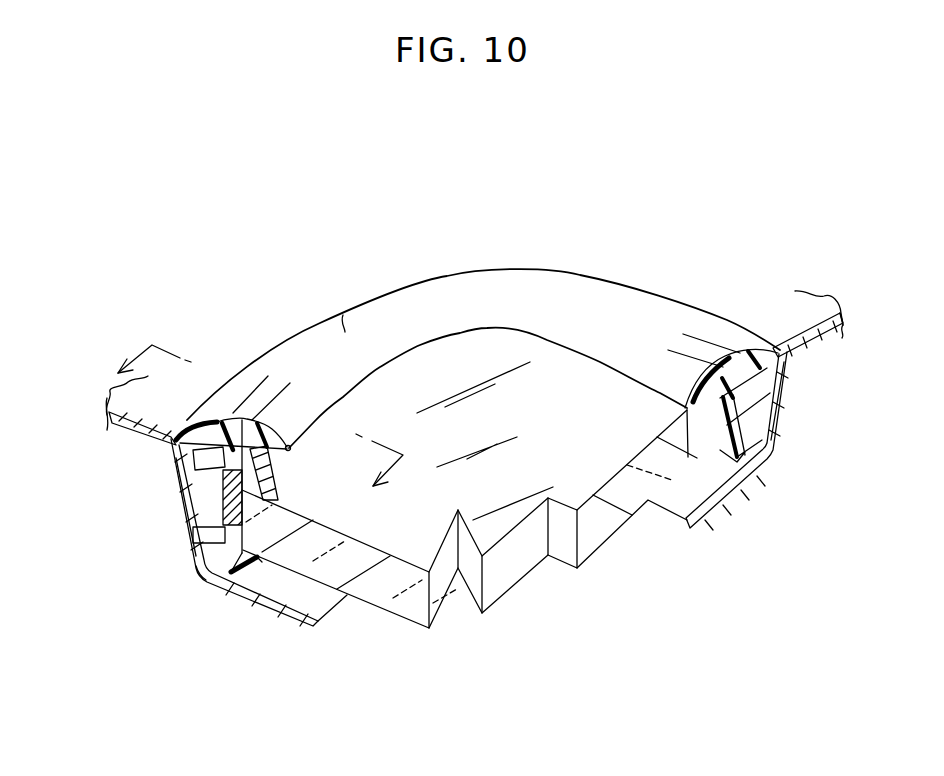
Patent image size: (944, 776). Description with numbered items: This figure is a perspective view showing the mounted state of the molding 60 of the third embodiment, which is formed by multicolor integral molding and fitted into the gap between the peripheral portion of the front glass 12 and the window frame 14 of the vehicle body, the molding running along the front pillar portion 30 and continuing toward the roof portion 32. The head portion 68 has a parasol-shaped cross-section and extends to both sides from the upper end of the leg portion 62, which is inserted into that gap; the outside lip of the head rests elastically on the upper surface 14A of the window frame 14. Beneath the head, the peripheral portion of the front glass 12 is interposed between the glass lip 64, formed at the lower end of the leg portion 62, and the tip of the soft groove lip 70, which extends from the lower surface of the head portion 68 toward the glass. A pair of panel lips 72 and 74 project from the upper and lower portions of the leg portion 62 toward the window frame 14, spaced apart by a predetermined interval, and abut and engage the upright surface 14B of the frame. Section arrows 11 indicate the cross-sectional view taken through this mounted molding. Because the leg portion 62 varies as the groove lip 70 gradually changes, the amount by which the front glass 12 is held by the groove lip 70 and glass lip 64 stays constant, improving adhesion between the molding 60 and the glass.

The section arrow 11 is at (400, 510).
The front glass 12 is at (747, 296).
The window frame 14 is at (237, 598).
The upper surface 14A is at (109, 432).
The upright surface 14B is at (181, 518).
The front pillar portion 30 is at (108, 394).
The roof portion 32 is at (826, 292).
The molding 60 is at (583, 272).
The leg portion 62 is at (200, 498).
The glass lip 64 is at (257, 557).
The head portion 68 is at (343, 315).
The groove lip 70 is at (294, 464).
The panel lip 72 is at (201, 463).
The panel lip 74 is at (187, 574).